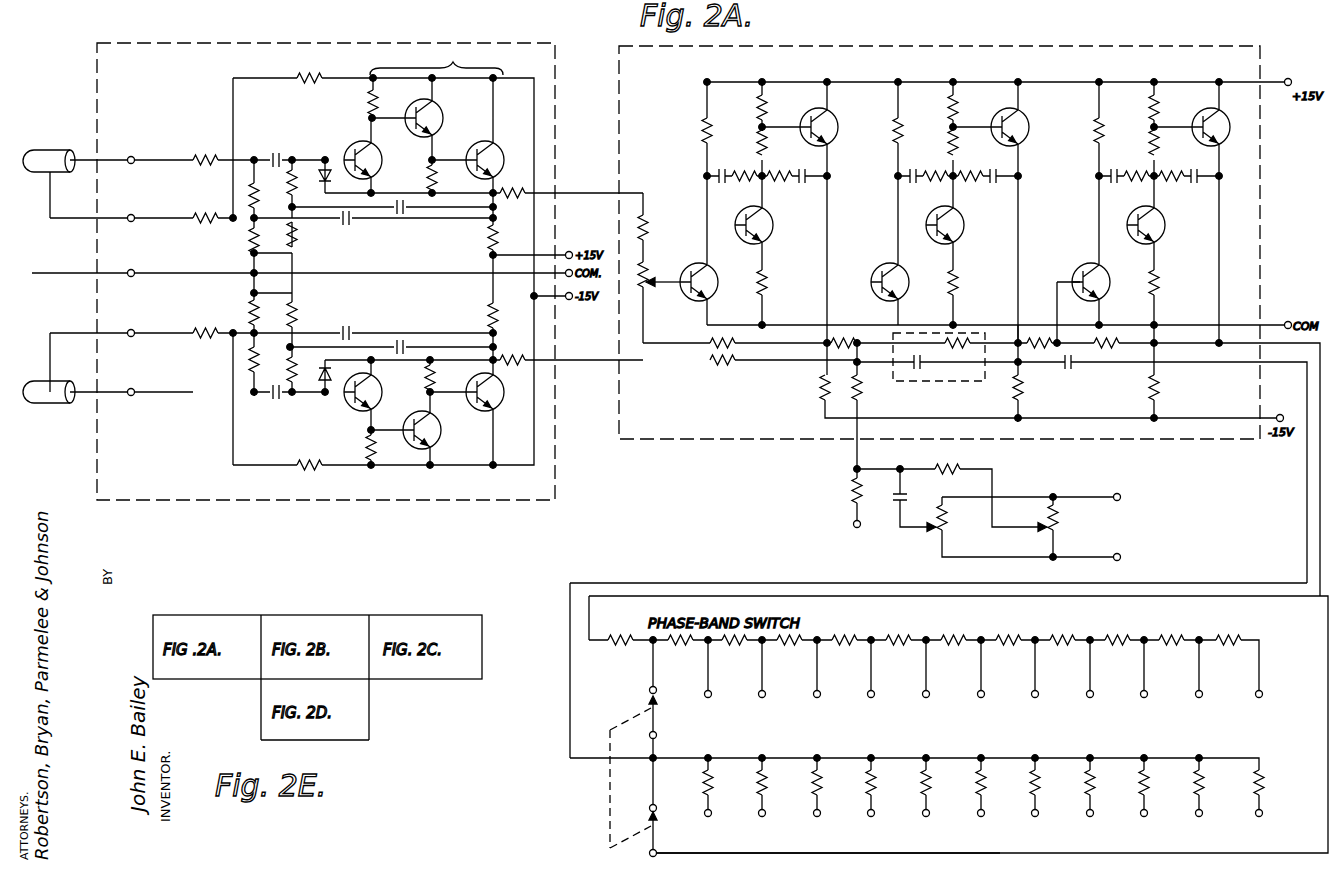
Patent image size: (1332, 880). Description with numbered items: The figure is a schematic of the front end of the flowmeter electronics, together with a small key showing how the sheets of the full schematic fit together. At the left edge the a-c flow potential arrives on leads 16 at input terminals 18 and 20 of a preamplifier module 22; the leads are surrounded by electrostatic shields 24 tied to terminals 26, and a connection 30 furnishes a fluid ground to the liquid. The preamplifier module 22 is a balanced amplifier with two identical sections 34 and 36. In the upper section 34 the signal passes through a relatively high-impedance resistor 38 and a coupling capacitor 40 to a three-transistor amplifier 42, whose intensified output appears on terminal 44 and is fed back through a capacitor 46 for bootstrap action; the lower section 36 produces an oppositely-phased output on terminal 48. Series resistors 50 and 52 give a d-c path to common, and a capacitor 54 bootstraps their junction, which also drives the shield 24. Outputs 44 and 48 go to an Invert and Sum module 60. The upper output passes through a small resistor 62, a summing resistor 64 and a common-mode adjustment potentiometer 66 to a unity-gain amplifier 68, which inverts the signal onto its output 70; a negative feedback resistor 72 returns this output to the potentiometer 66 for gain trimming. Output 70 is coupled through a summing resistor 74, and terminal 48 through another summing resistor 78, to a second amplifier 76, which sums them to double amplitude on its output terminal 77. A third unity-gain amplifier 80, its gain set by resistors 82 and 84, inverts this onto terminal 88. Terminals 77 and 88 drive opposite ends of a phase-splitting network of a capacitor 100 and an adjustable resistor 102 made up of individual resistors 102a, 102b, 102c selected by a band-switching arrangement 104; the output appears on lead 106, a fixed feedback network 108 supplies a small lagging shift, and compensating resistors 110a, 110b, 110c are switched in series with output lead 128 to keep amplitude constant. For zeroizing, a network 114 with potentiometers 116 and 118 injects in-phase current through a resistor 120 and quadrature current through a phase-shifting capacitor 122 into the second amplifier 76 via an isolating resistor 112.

The leads 16 is at (110, 158).
The input terminal 18 is at (135, 157).
The input terminal 20 is at (135, 395).
The preamplifier module 22 is at (294, 40).
The electrostatic shields 24 is at (45, 150).
The terminals 26 is at (134, 215).
The connection 30 is at (56, 272).
The upper amplifier section 34 is at (345, 88).
The lower amplifier section 36 is at (326, 428).
The resistor 38 is at (206, 157).
The coupling capacitor 40 is at (275, 152).
The three-transistor amplifier 42 is at (455, 60).
The output terminal 44 is at (496, 190).
The capacitor 46 is at (402, 210).
The second output terminal 48 is at (496, 354).
The resistor 50 is at (252, 182).
The resistor 52 is at (252, 250).
The capacitor 54 is at (348, 224).
The Invert and Sum module 60 is at (968, 46).
The resistor 62 is at (503, 222).
The summing resistor 64 is at (652, 228).
The common-mode adjustment potentiometer 66 is at (652, 270).
The three-transistor unity-gain amplifier 68 is at (693, 126).
The output 70 is at (824, 340).
The negative feedback resistor 72 is at (716, 340).
The summing resistor 74 is at (843, 340).
The second amplifier 76 is at (900, 75).
The output terminal 77 is at (1016, 340).
The summing resistor 78 is at (724, 364).
The third unity-gain amplifier 80 is at (1100, 78).
The resistor 82 is at (1071, 303).
The resistor 84 is at (1106, 340).
The terminal 88 is at (1219, 348).
The capacitor 100 is at (1073, 366).
The adjustable resistor 102 is at (966, 629).
The individual resistor 102a is at (622, 650).
The individual resistor 102b is at (688, 650).
The individual resistor 102c is at (738, 650).
The band-switching arrangement 104 is at (605, 815).
The lead 106 is at (746, 756).
The fixed feedback network 108 is at (968, 382).
The compensating resistor 110a is at (712, 790).
The compensating resistor 110b is at (766, 790).
The compensating resistor 110c is at (821, 790).
The isolating resistor 112 is at (915, 368).
The network 114 is at (1060, 472).
The adjustment potentiometer 116 is at (1062, 528).
The adjustment potentiometer 118 is at (935, 533).
The resistor 120 is at (975, 465).
The phase-shifting capacitor 122 is at (900, 490).
The output lead 128 is at (921, 851).